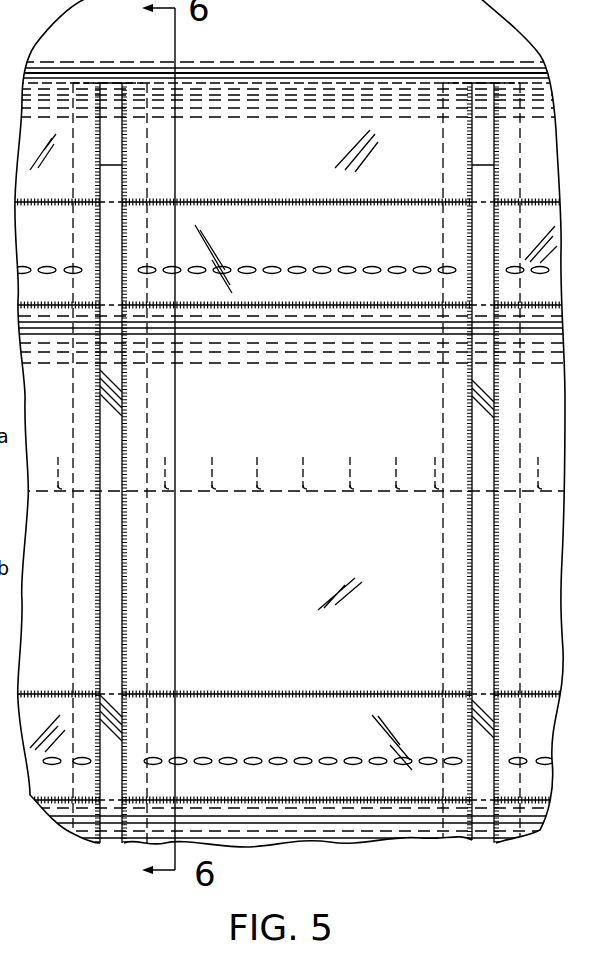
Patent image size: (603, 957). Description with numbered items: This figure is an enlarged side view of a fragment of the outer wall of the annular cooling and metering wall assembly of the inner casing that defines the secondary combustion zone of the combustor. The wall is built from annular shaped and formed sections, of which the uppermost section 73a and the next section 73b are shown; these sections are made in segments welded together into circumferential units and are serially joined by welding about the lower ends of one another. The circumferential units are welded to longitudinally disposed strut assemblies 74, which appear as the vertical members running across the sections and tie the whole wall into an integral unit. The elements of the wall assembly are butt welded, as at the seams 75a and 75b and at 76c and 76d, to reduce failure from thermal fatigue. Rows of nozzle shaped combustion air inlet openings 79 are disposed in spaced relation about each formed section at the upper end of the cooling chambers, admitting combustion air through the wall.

The annular shaped and formed section 73a is at (224, 322).
The annular shaped and formed section 73b is at (306, 827).
The longitudinally disposed strut assemblies 74 is at (102, 606).
The butt weld 75a is at (214, 200).
The butt weld 75b is at (228, 692).
The nozzle shaped combustion air inlet openings 79 is at (275, 268).
The butt weld 76c is at (10, 850).
The butt weld 76d is at (11, 939).